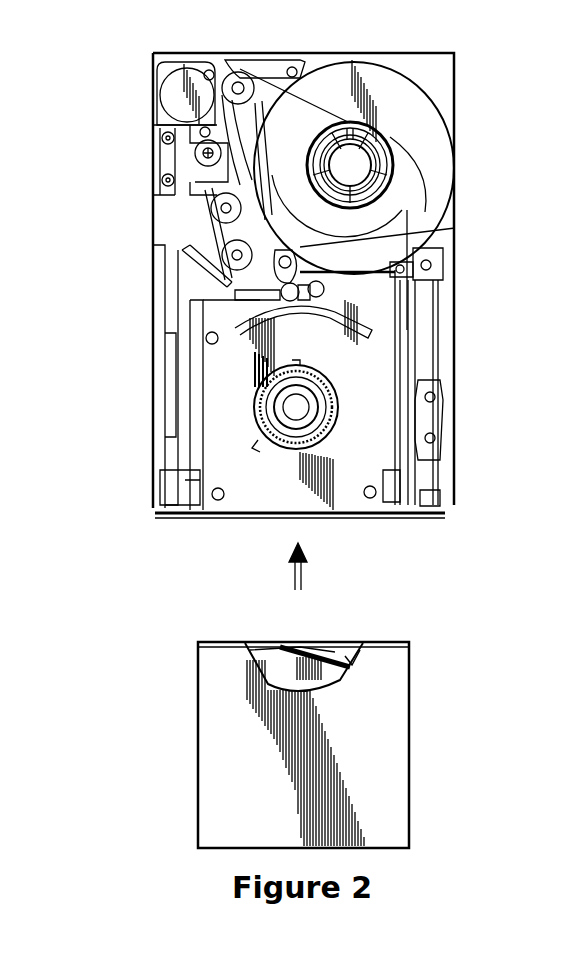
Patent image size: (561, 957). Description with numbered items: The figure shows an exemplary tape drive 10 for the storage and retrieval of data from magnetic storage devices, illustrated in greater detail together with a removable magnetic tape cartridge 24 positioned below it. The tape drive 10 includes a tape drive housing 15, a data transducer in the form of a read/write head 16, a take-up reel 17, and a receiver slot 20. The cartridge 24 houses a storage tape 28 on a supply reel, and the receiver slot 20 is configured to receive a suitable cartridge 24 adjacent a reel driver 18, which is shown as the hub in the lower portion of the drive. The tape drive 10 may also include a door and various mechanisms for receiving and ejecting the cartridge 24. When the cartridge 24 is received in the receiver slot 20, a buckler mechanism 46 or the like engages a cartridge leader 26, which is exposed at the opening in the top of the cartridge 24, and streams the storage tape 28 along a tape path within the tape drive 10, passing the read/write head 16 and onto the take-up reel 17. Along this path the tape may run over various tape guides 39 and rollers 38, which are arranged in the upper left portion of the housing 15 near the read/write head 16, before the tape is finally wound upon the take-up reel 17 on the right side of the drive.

The tape drive 10 is at (467, 256).
The tape drive housing 15 is at (455, 327).
The read/write head 16 is at (195, 158).
The take-up reel 17 is at (445, 115).
The reel driver 18 is at (253, 408).
The receiver slot 20 is at (380, 506).
The magnetic tape cartridge 24 is at (411, 703).
The cartridge leader 26 is at (305, 635).
The storage tape 28 is at (267, 643).
The rollers 38 is at (215, 268).
The tape guides 39 is at (175, 73).
The buckler mechanism 46 is at (250, 300).